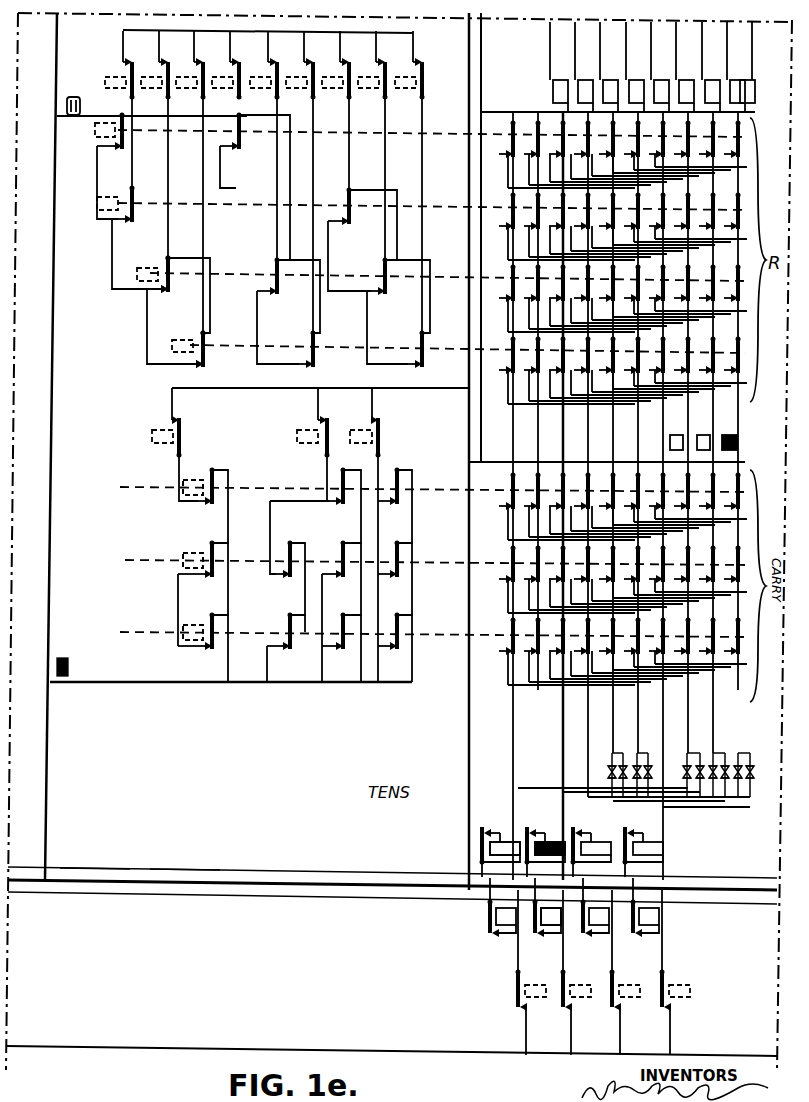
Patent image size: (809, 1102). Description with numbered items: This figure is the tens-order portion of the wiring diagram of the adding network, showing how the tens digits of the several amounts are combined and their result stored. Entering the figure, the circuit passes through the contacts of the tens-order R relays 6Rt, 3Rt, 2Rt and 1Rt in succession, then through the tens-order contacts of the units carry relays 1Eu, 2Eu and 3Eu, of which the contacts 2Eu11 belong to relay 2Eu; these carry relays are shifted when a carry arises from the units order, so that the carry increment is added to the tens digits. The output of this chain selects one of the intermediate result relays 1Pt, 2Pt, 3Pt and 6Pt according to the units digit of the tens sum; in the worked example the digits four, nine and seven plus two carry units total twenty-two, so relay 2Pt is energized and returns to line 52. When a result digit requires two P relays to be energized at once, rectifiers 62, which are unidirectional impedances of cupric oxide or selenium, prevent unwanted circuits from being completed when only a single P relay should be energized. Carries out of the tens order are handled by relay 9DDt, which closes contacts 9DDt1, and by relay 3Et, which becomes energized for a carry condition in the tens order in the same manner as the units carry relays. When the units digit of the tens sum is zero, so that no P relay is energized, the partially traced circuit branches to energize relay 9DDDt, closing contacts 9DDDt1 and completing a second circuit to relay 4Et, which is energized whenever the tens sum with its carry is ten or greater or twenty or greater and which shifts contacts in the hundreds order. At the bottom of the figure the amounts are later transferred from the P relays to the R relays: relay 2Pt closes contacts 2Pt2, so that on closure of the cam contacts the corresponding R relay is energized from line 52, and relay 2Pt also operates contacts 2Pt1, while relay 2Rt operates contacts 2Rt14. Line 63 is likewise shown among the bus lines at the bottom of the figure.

The carry relay 3Et is at (77, 95).
The R relay of tens order 6Rt is at (660, 933).
The R relay of tens order 3Rt is at (610, 933).
The R relay of tens order 2Rt is at (562, 933).
The R relay of tens order 1Rt is at (492, 933).
The carry relay of tens order 9DDt is at (407, 76).
The contacts of relay 9DDt 9DDt1 is at (423, 68).
The relay 9DDDt is at (740, 446).
The contacts of relay 9DDDt 9DDDt1 is at (380, 430).
The carry relay of units order 1Eu is at (182, 488).
The carry relay of units order 2Eu is at (182, 561).
The carry relay of units order 3Eu is at (182, 633).
The contacts of relay 2Eu 2Eu11 is at (396, 580).
The relay 4Et is at (70, 668).
The rectifiers 62 is at (750, 775).
The P relay of tens order 1Pt is at (505, 830).
The P relay of tens order 2Pt is at (552, 842).
The contacts of relay 2Pt 2Pt1 is at (511, 842).
The contacts of relay 2Pt 2Pt2 is at (572, 1010).
The P relay of tens order 3Pt is at (602, 842).
The P relay of tens order 6Pt is at (664, 850).
The contacts of relay 2Rt 2Rt14 is at (540, 938).
The line 52 is at (113, 870).
The bus line 63 is at (203, 869).